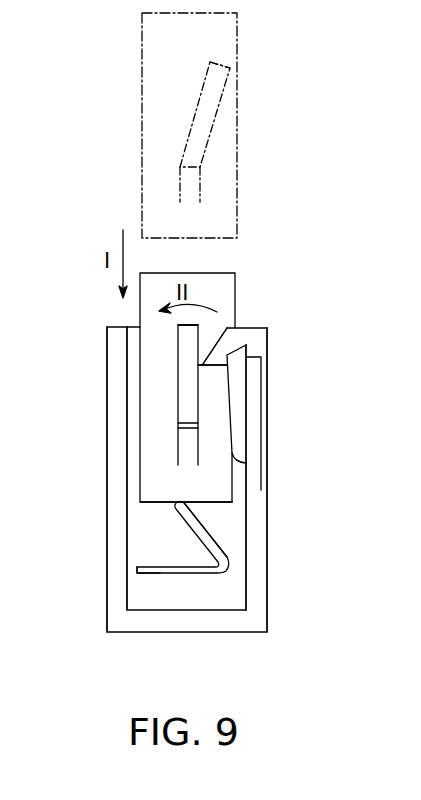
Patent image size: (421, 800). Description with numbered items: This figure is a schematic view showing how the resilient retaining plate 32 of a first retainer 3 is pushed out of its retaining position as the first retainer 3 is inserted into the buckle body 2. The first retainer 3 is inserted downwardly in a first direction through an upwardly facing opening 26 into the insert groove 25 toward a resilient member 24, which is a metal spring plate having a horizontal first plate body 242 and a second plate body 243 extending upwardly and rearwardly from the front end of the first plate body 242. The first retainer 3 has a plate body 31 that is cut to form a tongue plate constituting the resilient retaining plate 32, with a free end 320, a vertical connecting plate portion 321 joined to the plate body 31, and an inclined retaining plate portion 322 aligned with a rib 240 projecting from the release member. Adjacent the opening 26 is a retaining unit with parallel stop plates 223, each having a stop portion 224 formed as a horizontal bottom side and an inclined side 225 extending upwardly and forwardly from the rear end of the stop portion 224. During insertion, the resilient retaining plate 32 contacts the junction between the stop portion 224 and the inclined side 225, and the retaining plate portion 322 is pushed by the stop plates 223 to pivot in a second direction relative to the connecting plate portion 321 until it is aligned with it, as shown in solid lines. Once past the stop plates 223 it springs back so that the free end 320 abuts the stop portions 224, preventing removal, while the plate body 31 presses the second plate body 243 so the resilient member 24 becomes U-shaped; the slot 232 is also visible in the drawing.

The buckle body 2 is at (278, 627).
The first retainer 3 is at (249, 73).
The resilient member 24 is at (187, 586).
The first plate body 242 is at (153, 575).
The second plate body 243 is at (227, 530).
The insert groove 25 is at (246, 538).
The upwardly facing opening 26 is at (136, 344).
The plate body 31 is at (235, 502).
The resilient retaining plate 32 is at (191, 118).
The free end 320 is at (181, 325).
The connecting plate portion 321 is at (187, 443).
The retaining plate portion 322 is at (213, 93).
The stop plate 223 is at (222, 350).
The stop portion 224 is at (238, 380).
The inclined side 225 is at (207, 362).
The slot 232 is at (255, 445).
The rib 240 is at (236, 393).